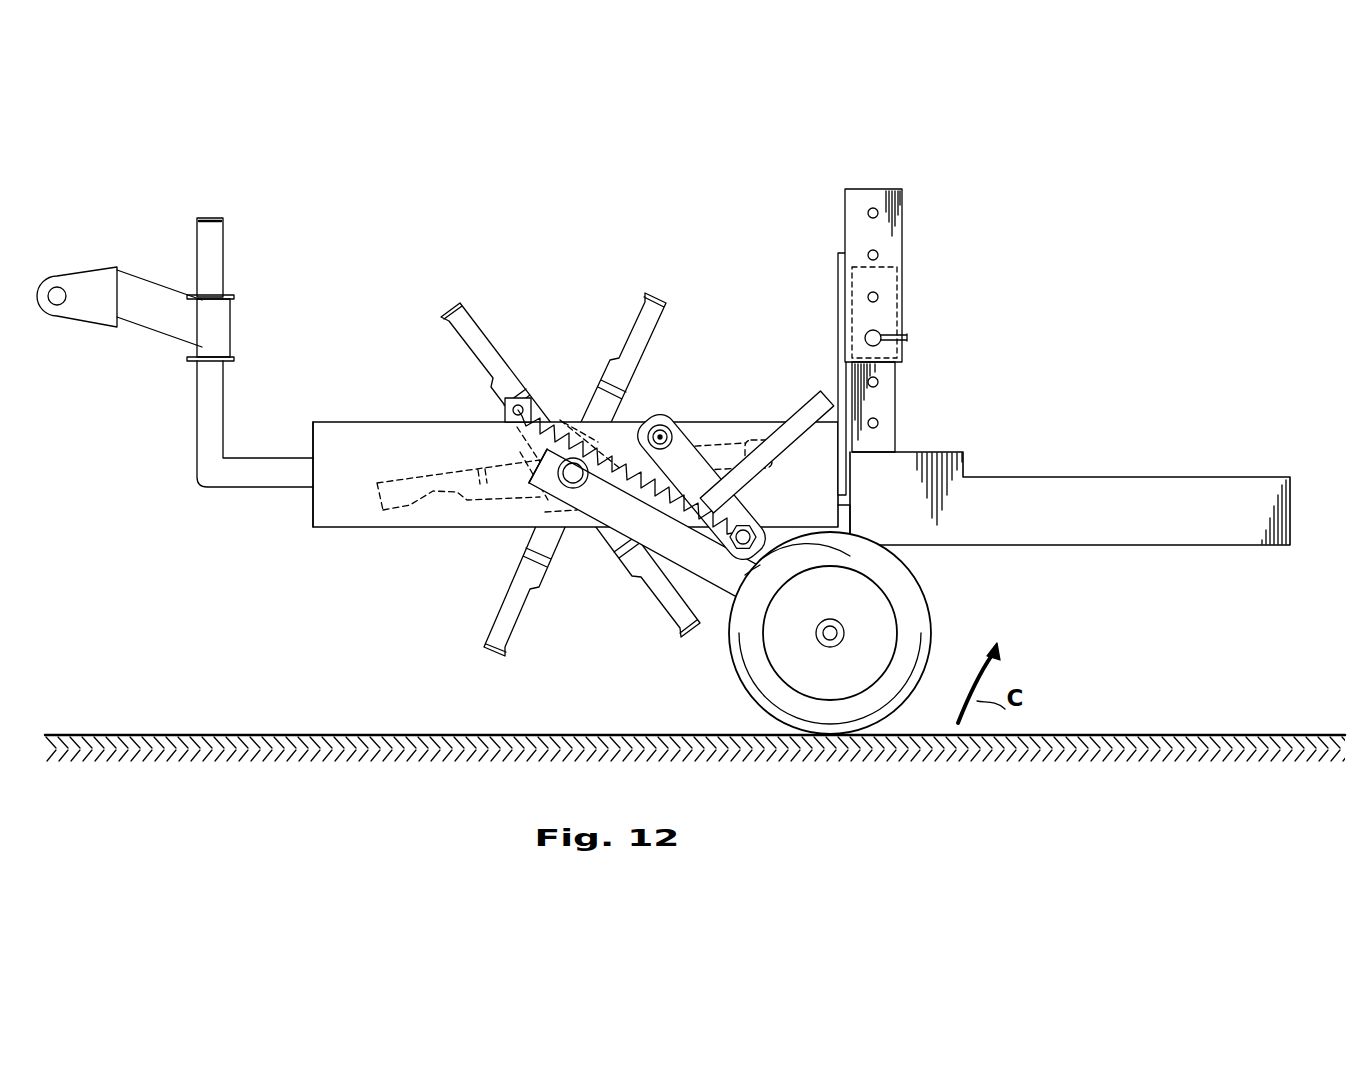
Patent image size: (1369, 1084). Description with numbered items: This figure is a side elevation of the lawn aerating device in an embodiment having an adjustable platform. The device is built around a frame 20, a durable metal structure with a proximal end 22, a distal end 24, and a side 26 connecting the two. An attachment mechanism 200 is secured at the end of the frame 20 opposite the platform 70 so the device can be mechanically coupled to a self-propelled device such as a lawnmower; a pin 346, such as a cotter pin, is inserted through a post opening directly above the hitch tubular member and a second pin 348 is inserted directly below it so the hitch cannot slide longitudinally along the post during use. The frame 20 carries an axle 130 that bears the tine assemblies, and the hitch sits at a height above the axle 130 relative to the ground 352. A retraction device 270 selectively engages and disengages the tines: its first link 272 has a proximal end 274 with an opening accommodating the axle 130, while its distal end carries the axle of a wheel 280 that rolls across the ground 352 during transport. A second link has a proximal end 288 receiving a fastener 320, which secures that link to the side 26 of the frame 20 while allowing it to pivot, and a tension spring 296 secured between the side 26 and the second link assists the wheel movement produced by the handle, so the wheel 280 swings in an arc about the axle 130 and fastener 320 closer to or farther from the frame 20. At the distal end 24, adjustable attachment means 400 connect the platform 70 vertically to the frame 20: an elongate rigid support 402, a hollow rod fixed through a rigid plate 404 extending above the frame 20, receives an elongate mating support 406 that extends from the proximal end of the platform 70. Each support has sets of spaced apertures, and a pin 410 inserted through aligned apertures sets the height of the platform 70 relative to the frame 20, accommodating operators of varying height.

The frame 20 is at (830, 669).
The proximal end 22 is at (313, 441).
The distal end 24 is at (849, 506).
The side 26 is at (338, 497).
The platform 70 is at (1034, 523).
The axle 130 is at (563, 475).
The attachment mechanism 200 is at (437, 384).
The retraction device 270 is at (680, 580).
The first link 272 is at (703, 611).
The proximal end 274 is at (526, 482).
The wheel 280 is at (775, 714).
The proximal end 288 is at (668, 394).
The tension spring 296 is at (587, 437).
The fastener 320 is at (665, 434).
The pin 346 is at (232, 292).
The pin 348 is at (212, 363).
The ground 352 is at (162, 736).
The adjustable attachment means 400 is at (885, 340).
The elongate rigid support 402 is at (903, 230).
The rigid plate 404 is at (837, 297).
The mating support 406 is at (887, 388).
The pin 410 is at (880, 333).